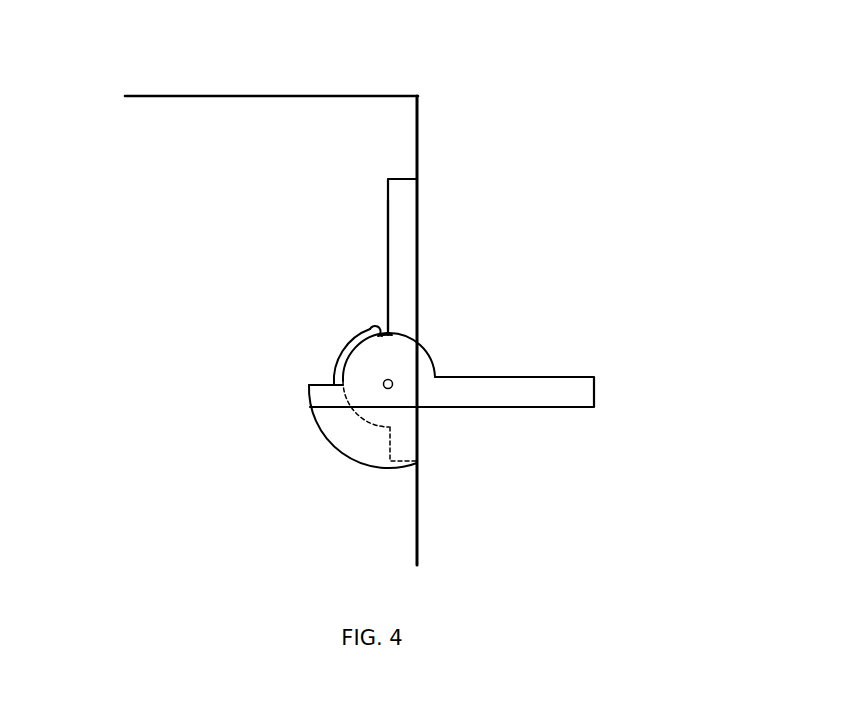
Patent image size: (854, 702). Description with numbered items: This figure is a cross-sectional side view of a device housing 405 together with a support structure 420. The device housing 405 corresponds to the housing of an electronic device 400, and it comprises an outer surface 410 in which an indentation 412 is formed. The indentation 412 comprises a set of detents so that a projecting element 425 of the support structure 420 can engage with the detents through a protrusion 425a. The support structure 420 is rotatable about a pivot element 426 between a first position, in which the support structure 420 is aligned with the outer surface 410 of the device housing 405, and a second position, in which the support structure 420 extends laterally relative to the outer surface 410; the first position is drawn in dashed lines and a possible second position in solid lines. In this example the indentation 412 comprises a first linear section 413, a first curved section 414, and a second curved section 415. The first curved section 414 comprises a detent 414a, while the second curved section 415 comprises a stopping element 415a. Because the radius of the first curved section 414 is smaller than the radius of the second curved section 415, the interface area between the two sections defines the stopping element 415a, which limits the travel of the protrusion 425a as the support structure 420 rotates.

The electronic device 400 is at (367, 288).
The device housing 405 is at (233, 96).
The outer surface 410 is at (418, 135).
The indentation 412 is at (403, 232).
The first linear section 413 is at (388, 242).
The first curved section 414 is at (347, 348).
The detent 414a is at (370, 322).
The second curved section 415 is at (345, 454).
The stopping element 415a is at (318, 383).
The support structure 420 is at (613, 390).
The projecting element 425 is at (388, 362).
The protrusion 425a is at (381, 336).
The pivot element 426 is at (389, 390).